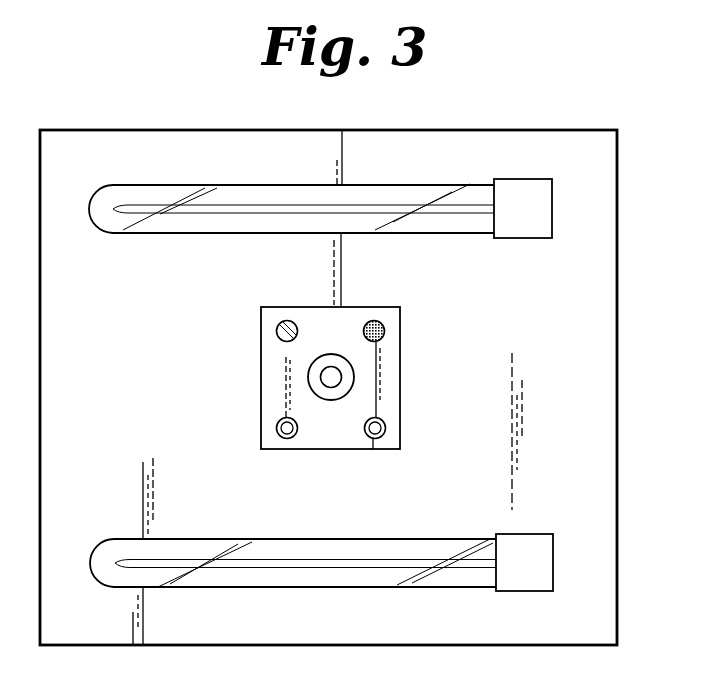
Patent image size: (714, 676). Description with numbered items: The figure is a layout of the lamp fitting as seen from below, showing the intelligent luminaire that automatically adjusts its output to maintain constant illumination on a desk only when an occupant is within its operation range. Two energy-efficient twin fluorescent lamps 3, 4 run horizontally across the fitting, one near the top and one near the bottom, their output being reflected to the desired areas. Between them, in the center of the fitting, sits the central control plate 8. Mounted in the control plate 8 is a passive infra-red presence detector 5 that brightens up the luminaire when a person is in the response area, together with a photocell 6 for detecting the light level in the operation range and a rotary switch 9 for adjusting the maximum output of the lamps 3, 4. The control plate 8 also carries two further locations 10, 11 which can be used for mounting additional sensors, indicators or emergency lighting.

The fluorescent lamp 3 is at (455, 538).
The fluorescent lamp 4 is at (433, 237).
The passive infra-red presence detector 5 is at (308, 377).
The photocell 6 is at (385, 331).
The central control plate 8 is at (400, 375).
The rotary switch 9 is at (277, 331).
The further location 10 is at (276, 428).
The further location 11 is at (387, 428).